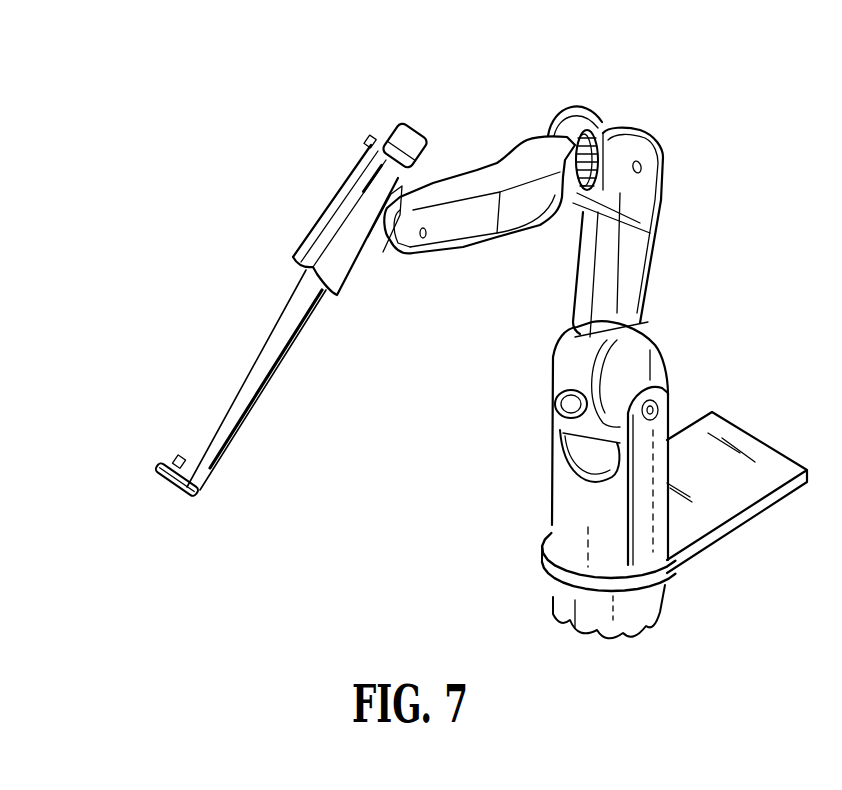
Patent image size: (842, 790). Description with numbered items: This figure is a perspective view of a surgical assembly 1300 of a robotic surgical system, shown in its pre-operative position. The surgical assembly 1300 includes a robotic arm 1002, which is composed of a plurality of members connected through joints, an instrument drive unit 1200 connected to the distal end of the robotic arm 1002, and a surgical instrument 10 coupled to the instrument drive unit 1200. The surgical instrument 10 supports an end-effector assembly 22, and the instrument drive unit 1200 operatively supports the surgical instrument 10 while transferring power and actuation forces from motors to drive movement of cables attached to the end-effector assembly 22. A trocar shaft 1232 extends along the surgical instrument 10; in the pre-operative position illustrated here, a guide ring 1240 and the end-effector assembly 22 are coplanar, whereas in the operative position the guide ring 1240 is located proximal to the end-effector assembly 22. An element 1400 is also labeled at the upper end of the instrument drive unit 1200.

The surgical instrument 10 is at (279, 297).
The end-effector assembly 22 is at (179, 457).
The robotic arm 1002 is at (647, 277).
The instrument drive unit 1200 is at (348, 157).
The trocar shaft 1232 is at (273, 378).
The guide ring 1240 is at (163, 462).
The surgical assembly 1300 is at (493, 73).
The adapter cap 1400 is at (412, 108).